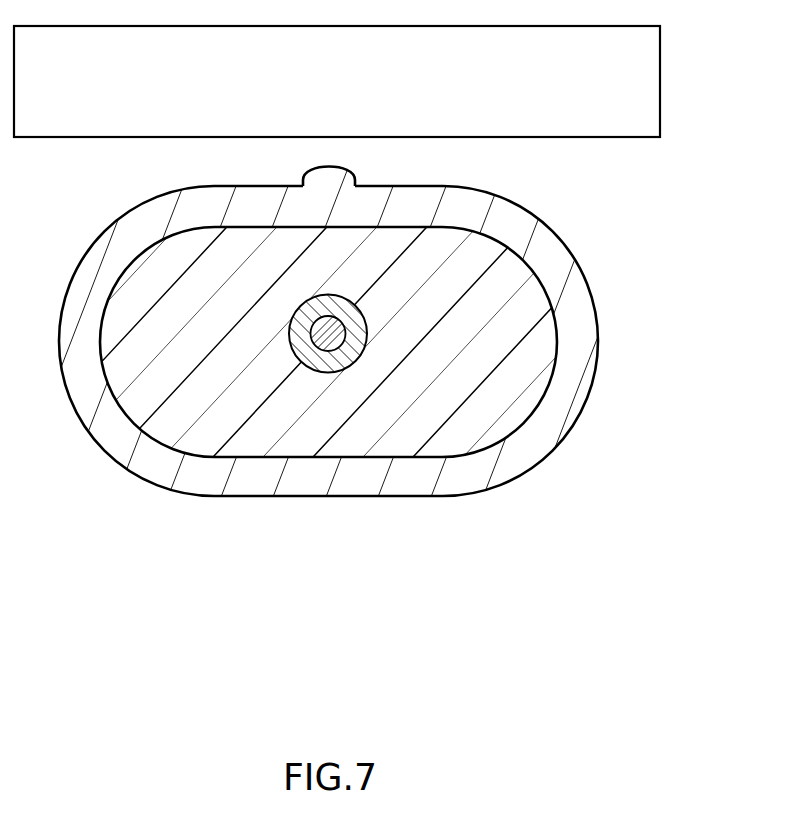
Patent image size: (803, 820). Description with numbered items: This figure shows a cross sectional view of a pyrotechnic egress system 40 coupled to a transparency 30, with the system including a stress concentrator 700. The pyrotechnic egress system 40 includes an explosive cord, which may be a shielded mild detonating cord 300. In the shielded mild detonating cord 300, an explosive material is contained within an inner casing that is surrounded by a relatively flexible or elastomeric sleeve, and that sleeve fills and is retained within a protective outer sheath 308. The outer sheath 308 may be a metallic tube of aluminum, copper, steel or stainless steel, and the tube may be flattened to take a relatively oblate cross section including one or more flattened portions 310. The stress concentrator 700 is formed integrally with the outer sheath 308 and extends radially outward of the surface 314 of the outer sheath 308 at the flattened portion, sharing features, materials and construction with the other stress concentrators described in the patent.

The transparency 30 is at (555, 86).
The pyrotechnic egress system 40 is at (394, 268).
The shielded mild detonating cord 300 is at (394, 330).
The outer sheath 308 is at (598, 320).
The surface of the outer sheath 314 is at (555, 234).
The flattened portion 310 is at (294, 222).
The stress concentrator 700 is at (307, 184).